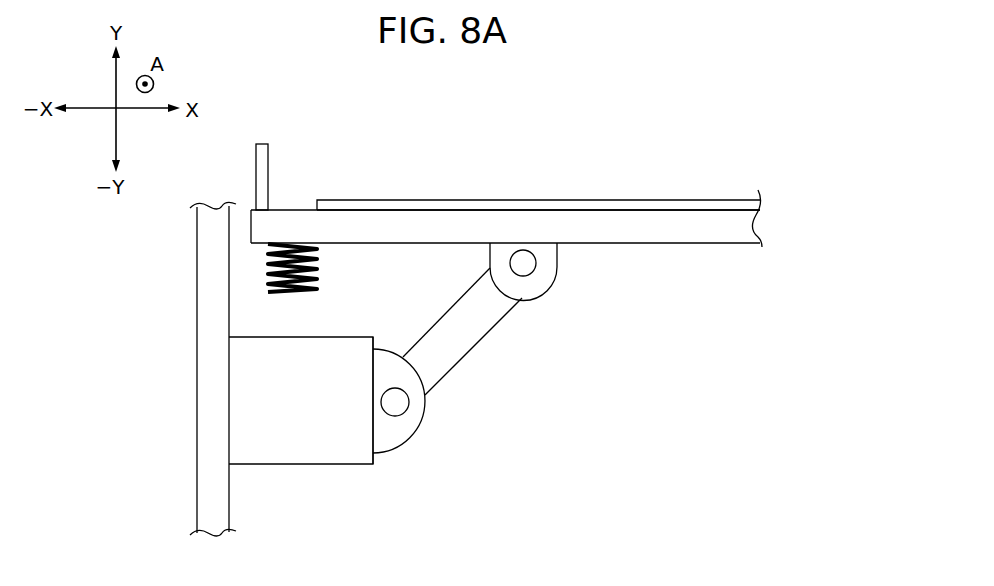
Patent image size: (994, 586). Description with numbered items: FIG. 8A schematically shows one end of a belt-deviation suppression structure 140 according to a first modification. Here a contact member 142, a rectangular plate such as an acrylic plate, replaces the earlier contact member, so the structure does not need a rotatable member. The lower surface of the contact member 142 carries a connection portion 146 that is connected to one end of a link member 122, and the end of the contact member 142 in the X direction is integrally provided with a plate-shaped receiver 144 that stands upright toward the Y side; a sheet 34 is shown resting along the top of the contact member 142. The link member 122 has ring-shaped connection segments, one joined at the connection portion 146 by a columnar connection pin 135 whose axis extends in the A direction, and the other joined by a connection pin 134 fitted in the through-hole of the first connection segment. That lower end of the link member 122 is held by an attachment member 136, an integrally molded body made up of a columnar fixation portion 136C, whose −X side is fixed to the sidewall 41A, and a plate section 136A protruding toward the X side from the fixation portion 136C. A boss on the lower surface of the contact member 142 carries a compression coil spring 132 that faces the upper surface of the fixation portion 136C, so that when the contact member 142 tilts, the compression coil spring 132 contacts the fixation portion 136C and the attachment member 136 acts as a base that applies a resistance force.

The sidewall 41A is at (207, 277).
The belt-deviation suppression structure 140 is at (506, 225).
The contact member 142 is at (505, 280).
The sheet 34 is at (515, 198).
The receiver 144 is at (266, 160).
The compression coil spring 132 is at (318, 264).
The connection pin 135 is at (528, 263).
The connection portion 146 is at (538, 282).
The link member 122 is at (463, 335).
The connection pin 134 is at (398, 400).
The attachment member 136 is at (357, 434).
The plate section 136A is at (396, 436).
The fixation portion 136C is at (334, 449).